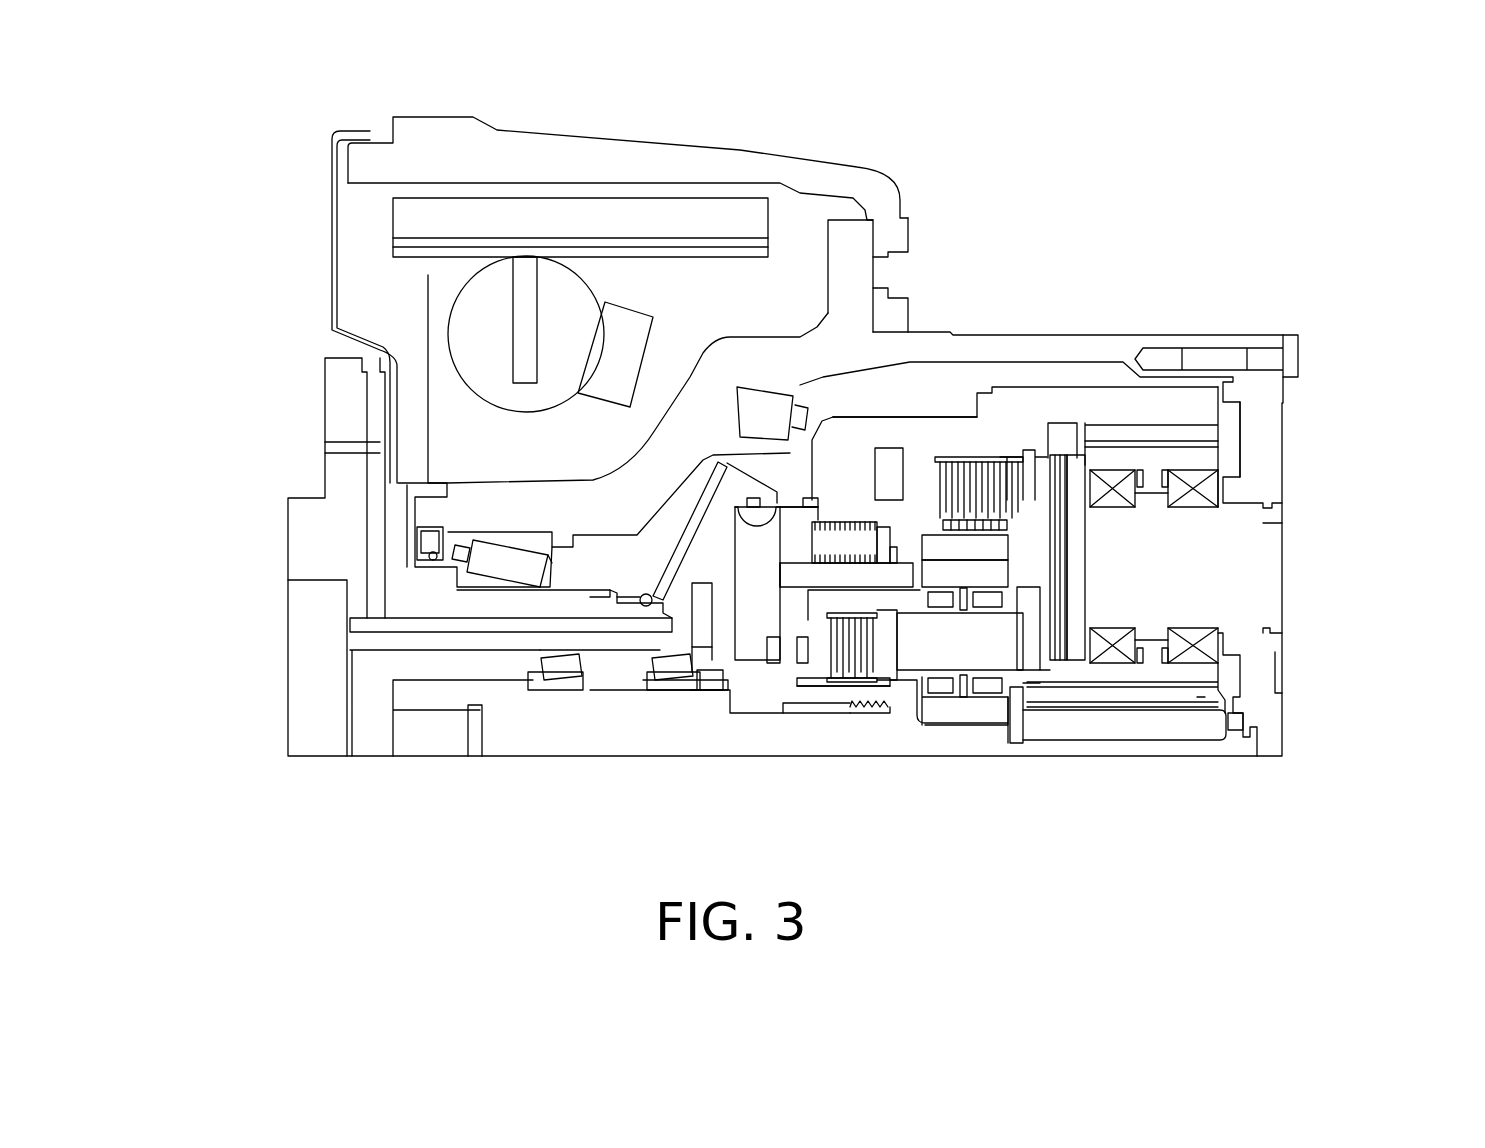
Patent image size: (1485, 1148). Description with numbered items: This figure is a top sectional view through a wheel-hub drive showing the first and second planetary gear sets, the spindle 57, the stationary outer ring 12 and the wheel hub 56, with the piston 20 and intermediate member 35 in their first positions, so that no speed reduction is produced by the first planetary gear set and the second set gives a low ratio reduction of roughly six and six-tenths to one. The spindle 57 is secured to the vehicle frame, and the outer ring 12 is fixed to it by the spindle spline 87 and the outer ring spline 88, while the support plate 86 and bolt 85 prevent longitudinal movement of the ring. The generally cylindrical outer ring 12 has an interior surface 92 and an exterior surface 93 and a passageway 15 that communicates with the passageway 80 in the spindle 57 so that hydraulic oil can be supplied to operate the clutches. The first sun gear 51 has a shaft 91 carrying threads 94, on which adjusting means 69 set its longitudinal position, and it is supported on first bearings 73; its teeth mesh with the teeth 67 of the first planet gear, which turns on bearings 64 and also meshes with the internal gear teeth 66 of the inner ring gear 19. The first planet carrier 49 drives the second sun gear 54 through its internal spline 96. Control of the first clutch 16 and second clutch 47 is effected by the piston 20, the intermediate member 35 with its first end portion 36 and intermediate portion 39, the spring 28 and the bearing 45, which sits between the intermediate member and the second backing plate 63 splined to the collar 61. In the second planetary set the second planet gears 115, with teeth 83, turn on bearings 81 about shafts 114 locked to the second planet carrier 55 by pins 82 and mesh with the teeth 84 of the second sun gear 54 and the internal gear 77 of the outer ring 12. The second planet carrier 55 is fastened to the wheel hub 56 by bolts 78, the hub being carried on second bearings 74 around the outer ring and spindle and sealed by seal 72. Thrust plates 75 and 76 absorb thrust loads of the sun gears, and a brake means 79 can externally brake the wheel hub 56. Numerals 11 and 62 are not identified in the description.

The clutch hub top 11 is at (790, 507).
The outer ring 12 is at (608, 587).
The passageway 15 is at (710, 490).
The first clutch 16 is at (1016, 487).
The inner ring gear 19 is at (1005, 562).
The piston 20 is at (890, 487).
The spring 28 is at (920, 530).
The intermediate member 35 is at (747, 573).
The first end portion 36 is at (903, 577).
The intermediate portion 39 is at (807, 573).
The bearing 45 is at (785, 653).
The second clutch 47 is at (880, 660).
The first planet carrier 49 is at (838, 613).
The first sun gear 51 is at (936, 756).
The second sun gear 54 is at (1183, 725).
The second planet carrier 55 is at (1260, 463).
The wheel hub 56 is at (1050, 347).
The spindle 57 is at (398, 612).
The collar 61 is at (838, 692).
The retainer 62 is at (880, 633).
The second backing plate 63 is at (828, 728).
The bearings 64 is at (983, 600).
The internal gear teeth 66 is at (982, 538).
The gear teeth 67 is at (998, 743).
The adjusting means 69 is at (716, 675).
The seal 72 is at (440, 560).
The first bearings 73 is at (577, 595).
The second bearings 74 is at (770, 420).
The thrust plate 75 is at (1238, 720).
The thrust plate 76 is at (1022, 705).
The internal gear 77 is at (1193, 433).
The bolts 78 is at (1208, 363).
The brake means 79 is at (563, 195).
The passageway 80 is at (372, 497).
The bearings 81 is at (1110, 635).
The pins 82 is at (1100, 363).
The teeth 83 is at (1197, 697).
The teeth 84 is at (1080, 695).
The bolt 85 is at (347, 677).
The support plate 86 is at (647, 650).
The spindle spline 87 is at (485, 638).
The outer ring spline 88 is at (553, 593).
The shaft 91 is at (858, 735).
The interior surface 92 is at (780, 517).
The exterior surface 93 is at (875, 413).
The threads 94 is at (706, 680).
The internal spline 96 is at (1075, 720).
The shafts 114 is at (1263, 523).
The second planet gear 115 is at (1193, 457).